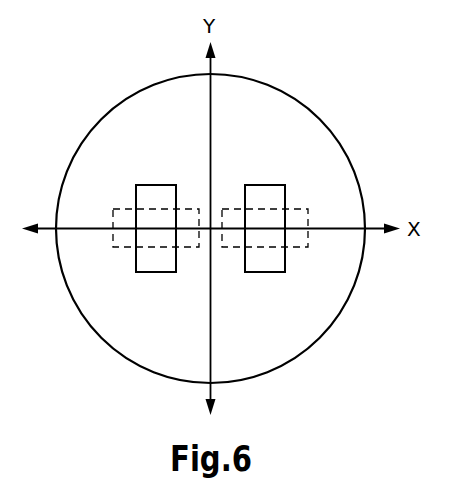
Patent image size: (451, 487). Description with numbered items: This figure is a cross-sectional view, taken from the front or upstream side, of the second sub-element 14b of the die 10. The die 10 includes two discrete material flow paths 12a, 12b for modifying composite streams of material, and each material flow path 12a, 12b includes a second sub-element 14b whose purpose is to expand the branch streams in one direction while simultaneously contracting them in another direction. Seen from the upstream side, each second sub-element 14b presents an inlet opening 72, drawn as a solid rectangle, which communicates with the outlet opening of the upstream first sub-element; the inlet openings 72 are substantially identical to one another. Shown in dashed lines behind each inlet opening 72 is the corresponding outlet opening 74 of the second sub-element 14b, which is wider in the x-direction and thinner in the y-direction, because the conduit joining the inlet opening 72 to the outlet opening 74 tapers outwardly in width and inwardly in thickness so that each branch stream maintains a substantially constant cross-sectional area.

The die 10 is at (340, 90).
The material flow path 12a is at (122, 295).
The material flow path 12b is at (277, 283).
The inlet opening 72 is at (148, 185).
The outlet opening 74 is at (120, 207).
The second sub-element 14b is at (155, 272).